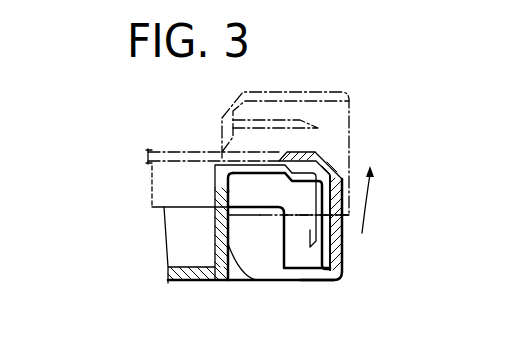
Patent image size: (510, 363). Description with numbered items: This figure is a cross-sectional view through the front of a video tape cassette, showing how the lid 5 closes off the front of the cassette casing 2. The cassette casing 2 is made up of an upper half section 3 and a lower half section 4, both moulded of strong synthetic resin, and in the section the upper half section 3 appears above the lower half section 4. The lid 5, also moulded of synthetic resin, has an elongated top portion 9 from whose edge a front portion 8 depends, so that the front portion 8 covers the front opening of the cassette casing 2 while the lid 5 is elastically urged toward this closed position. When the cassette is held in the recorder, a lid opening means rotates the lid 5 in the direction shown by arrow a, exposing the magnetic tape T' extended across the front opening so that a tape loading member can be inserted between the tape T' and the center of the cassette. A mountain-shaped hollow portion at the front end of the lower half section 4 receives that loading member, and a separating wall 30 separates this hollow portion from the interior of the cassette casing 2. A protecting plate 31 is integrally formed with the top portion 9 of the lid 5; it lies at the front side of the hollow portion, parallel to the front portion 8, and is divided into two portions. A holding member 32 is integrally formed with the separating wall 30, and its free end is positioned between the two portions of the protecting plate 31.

The cassette casing 2 is at (136, 138).
The upper half section 3 is at (160, 187).
The lower half section 4 is at (176, 235).
The lid 5 is at (352, 262).
The front portion 8 is at (349, 101).
The top portion 9 is at (298, 156).
The separating wall 30 is at (255, 280).
The protecting plate 31 is at (309, 270).
The holding member 32 is at (333, 176).
The magnetic tape T' is at (370, 242).
The arrow a is at (372, 207).